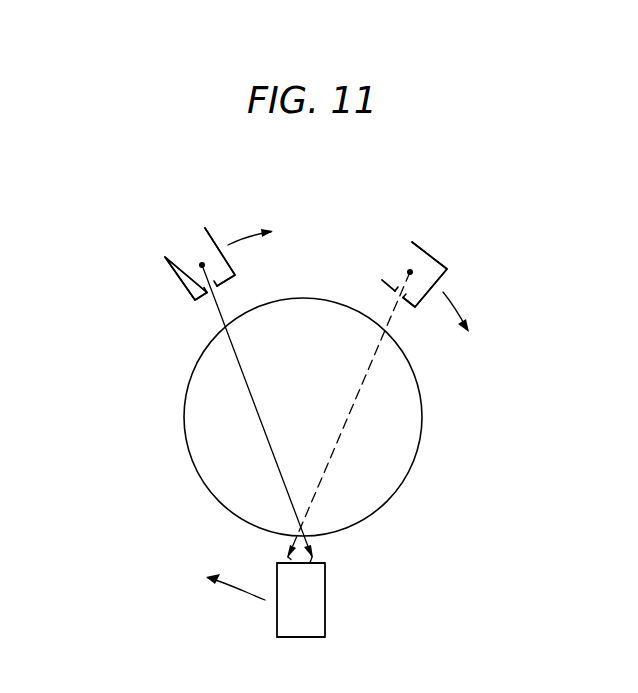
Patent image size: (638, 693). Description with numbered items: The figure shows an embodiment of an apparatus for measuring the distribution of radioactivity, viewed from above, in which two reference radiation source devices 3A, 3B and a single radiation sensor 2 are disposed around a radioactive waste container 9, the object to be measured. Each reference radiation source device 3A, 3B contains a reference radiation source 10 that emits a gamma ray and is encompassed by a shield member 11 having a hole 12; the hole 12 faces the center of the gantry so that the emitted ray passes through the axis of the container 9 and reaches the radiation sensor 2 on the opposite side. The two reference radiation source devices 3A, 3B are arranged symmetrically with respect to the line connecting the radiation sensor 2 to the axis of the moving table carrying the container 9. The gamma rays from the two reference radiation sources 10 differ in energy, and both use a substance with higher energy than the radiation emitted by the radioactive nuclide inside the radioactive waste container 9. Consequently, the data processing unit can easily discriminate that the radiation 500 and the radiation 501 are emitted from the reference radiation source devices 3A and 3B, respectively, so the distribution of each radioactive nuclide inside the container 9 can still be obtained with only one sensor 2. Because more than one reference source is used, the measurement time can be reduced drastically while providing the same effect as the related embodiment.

The radiation sensor 2 is at (325, 597).
The reference radiation source device 3A is at (191, 238).
The reference radiation source device 3B is at (428, 252).
The radioactive waste container 9 is at (212, 497).
The reference radiation source 10 is at (198, 265).
The shield member 11 is at (178, 248).
The hole 12 is at (214, 285).
The radiation 500 is at (258, 420).
The radiation 501 is at (362, 390).